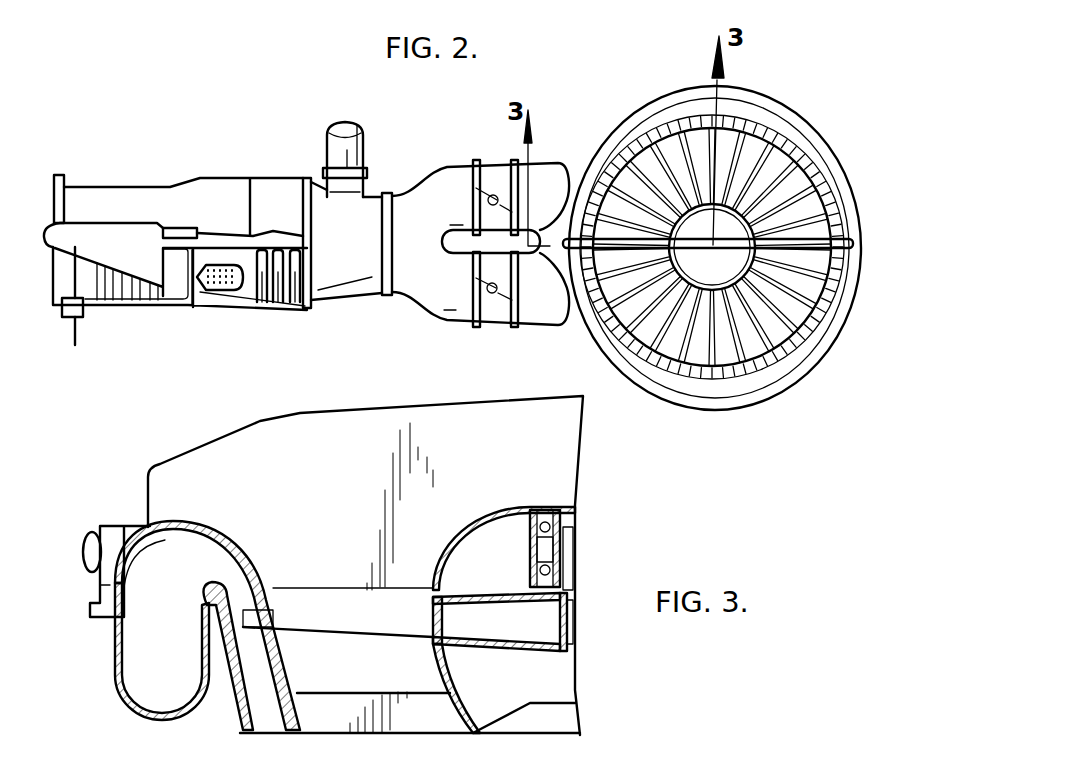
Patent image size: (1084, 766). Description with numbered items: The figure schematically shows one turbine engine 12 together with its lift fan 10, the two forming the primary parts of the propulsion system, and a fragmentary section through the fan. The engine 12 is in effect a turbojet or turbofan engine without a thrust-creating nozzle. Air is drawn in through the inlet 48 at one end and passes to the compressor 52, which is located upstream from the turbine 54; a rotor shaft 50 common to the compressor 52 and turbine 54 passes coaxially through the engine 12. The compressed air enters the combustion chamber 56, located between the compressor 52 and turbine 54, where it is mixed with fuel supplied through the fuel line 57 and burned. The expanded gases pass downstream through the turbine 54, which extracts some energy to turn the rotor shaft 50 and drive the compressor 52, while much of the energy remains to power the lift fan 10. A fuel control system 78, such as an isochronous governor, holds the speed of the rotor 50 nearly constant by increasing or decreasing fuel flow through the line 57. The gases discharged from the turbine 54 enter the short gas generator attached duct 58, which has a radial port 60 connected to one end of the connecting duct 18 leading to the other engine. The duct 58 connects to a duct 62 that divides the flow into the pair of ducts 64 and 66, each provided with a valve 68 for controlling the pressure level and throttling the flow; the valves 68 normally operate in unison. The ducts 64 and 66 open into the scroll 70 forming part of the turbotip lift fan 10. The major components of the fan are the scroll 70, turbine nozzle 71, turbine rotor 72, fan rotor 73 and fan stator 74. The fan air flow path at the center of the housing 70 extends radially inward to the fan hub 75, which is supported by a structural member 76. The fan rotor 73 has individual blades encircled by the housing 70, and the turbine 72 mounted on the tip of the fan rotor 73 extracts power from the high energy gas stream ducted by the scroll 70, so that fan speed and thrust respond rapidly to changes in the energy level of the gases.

In FIG. 2, the lift fan 10 is at (604, 92).
In FIG. 2, the turbine engine 12 is at (128, 174).
In FIG. 2, the connecting duct 18 is at (333, 133).
In FIG. 2, the inlet 48 is at (54, 180).
In FIG. 2, the rotor shaft 50 is at (195, 232).
In FIG. 2, the compressor 52 is at (137, 300).
In FIG. 2, the turbine 54 is at (282, 294).
In FIG. 2, the combustion chamber 56 is at (218, 292).
In FIG. 2, the fuel line 57 is at (162, 308).
In FIG. 2, the gas generator attached duct 58 is at (343, 302).
In FIG. 2, the radial port 60 is at (347, 190).
In FIG. 2, the duct 62 is at (428, 309).
In FIG. 2, the duct 64 is at (496, 195).
In FIG. 3, the duct 64 is at (85, 555).
In FIG. 2, the duct 66 is at (496, 297).
In FIG. 2, the valve 68 is at (476, 190).
In FIG. 2, the scroll 70 is at (690, 412).
In FIG. 3, the scroll 70 is at (128, 668).
In FIG. 3, the turbine nozzle 71 is at (238, 590).
In FIG. 3, the turbine rotor 72 is at (260, 592).
In FIG. 3, the fan rotor 73 is at (334, 630).
In FIG. 3, the fan stator 74 is at (388, 733).
In FIG. 2, the fan hub 75 is at (724, 275).
In FIG. 3, the fan hub 75 is at (575, 628).
In FIG. 2, the structural member 76 is at (592, 325).
In FIG. 3, the structural member 76 is at (227, 440).
In FIG. 2, the fuel control system 78 is at (62, 312).